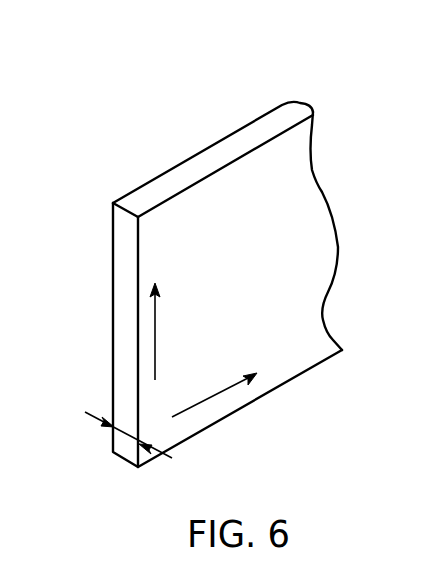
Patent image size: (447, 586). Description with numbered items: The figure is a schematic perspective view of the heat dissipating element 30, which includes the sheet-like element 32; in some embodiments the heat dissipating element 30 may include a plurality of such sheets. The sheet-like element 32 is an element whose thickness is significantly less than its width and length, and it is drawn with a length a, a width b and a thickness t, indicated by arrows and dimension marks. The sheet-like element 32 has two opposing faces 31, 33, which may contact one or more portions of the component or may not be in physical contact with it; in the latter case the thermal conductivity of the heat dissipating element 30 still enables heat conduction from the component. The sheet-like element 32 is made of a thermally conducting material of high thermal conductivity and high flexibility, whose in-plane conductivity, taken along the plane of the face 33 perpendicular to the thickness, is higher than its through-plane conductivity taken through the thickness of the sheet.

The heat dissipating element 30 is at (205, 261).
The face 31 is at (113, 293).
The sheet-like element 32 is at (293, 113).
The face 33 is at (311, 348).